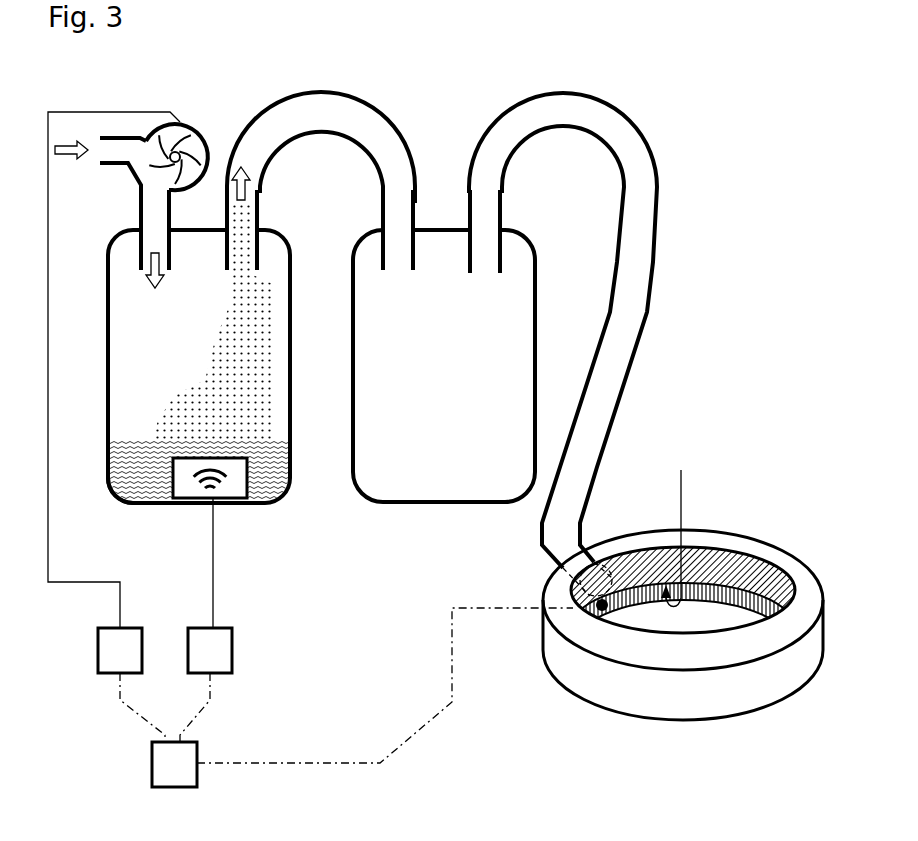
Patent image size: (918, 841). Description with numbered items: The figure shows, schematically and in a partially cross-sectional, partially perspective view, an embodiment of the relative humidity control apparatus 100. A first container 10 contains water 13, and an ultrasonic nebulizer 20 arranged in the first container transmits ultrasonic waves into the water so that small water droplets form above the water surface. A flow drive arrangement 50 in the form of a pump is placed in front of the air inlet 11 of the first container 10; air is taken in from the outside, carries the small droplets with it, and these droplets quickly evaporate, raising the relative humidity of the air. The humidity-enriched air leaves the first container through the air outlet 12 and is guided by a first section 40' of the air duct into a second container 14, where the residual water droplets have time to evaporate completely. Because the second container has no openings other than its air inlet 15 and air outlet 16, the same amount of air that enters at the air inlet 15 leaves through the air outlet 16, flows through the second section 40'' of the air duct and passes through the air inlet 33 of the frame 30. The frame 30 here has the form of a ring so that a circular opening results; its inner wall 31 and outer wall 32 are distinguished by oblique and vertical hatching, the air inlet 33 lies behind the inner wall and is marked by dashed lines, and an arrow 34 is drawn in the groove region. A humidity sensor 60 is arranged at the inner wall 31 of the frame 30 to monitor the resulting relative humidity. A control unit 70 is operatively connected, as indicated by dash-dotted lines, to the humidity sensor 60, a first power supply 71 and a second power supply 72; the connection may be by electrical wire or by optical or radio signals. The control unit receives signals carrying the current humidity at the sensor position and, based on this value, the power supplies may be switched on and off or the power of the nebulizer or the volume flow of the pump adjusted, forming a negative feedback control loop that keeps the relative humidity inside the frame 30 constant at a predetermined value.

The system 100 is at (423, 32).
The first container 10 is at (108, 345).
The air inlet 11 is at (122, 215).
The air outlet 12 is at (260, 215).
The water 13 is at (122, 492).
The second container 14 is at (418, 502).
The air inlet 15 is at (374, 218).
The air outlet 16 is at (508, 216).
The ultrasonic nebulizer 20 is at (222, 498).
The frame 30 is at (683, 623).
The inner wall 31 is at (740, 578).
The outer wall 32 is at (745, 622).
The air inlet 33 is at (611, 528).
The rotation direction 34 is at (673, 527).
The first section of the air duct 40' is at (321, 118).
The second section of the air duct 40'' is at (543, 317).
The flow drive arrangement 50 is at (173, 123).
The humidity sensor 60 is at (602, 612).
The control unit 70 is at (152, 757).
The first power supply 71 is at (232, 650).
The second power supply 72 is at (98, 645).